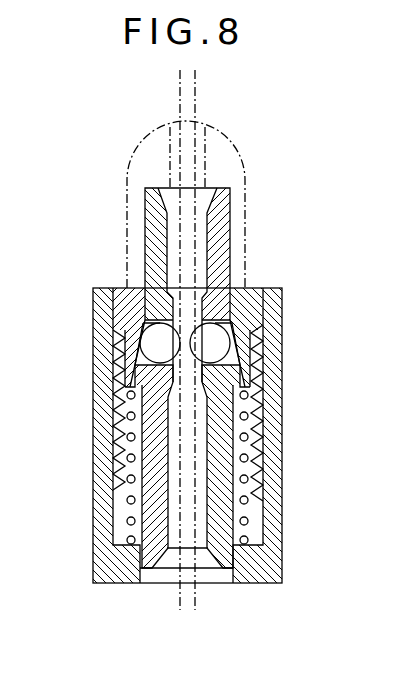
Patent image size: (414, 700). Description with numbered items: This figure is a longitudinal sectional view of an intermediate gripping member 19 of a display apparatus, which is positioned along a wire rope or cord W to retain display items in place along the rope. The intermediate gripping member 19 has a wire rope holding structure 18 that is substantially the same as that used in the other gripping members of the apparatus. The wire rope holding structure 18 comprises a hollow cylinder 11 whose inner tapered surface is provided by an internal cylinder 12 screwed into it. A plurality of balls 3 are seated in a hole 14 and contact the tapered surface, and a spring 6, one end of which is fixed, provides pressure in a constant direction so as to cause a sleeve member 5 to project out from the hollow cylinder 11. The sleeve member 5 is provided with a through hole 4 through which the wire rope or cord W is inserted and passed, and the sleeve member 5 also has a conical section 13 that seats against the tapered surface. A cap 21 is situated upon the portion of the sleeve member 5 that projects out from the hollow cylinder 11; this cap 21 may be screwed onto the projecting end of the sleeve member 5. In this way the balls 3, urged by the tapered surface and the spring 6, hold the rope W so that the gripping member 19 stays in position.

The wire rope or cord W is at (196, 102).
The cap 21 is at (157, 163).
The wire rope holding structure 18 is at (218, 266).
The intermediate gripping member 19 is at (282, 480).
The hollow cylinder 11 is at (268, 436).
The internal cylinder 12 is at (123, 302).
The conical section 13 is at (130, 377).
The hole 14 is at (137, 356).
The balls 3 is at (167, 333).
The through hole 4 is at (198, 560).
The sleeve member 5 is at (152, 555).
The spring 6 is at (130, 485).